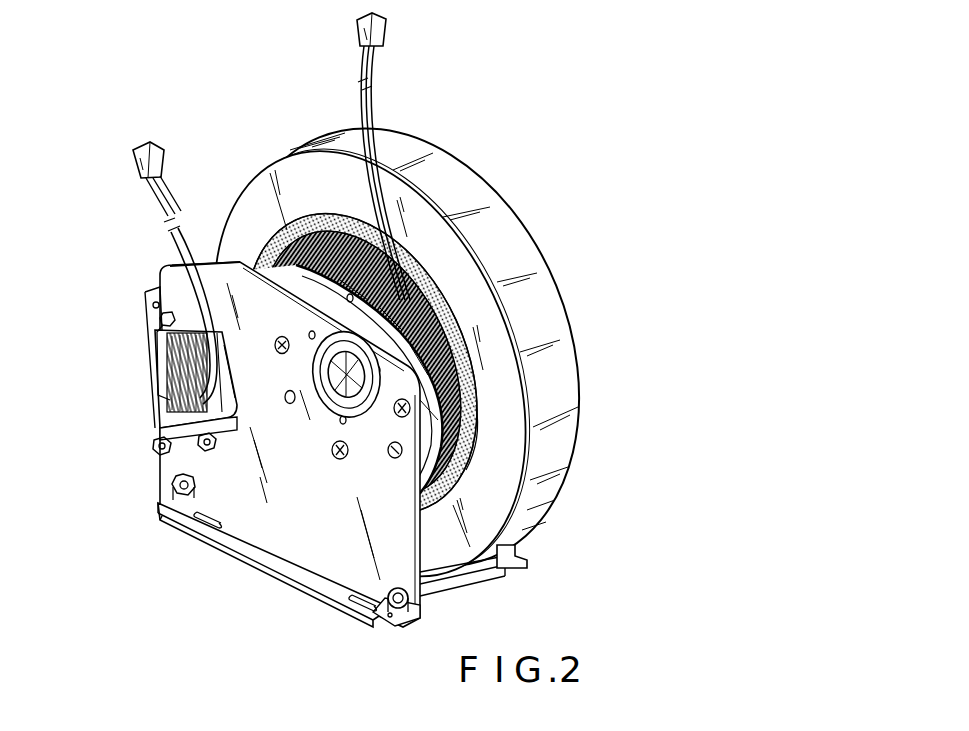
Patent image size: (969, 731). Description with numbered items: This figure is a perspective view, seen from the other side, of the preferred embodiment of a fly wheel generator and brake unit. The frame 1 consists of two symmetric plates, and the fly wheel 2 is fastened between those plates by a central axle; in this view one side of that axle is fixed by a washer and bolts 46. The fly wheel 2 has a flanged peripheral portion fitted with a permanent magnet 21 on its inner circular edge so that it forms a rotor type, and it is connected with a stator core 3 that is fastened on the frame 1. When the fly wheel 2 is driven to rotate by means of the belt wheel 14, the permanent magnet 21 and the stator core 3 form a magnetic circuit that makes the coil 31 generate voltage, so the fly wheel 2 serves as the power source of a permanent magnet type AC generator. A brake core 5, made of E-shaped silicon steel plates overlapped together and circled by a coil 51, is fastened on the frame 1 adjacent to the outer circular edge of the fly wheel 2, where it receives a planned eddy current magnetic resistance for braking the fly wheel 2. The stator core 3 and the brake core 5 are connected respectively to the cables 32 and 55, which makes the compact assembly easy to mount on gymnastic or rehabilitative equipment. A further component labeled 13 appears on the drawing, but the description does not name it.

The frame 1 is at (307, 533).
The fly wheel 2 is at (453, 195).
The stator core 3 is at (477, 360).
The brake core 5 is at (148, 372).
The base bar 13 is at (448, 573).
The belt wheel 14 is at (397, 627).
The permanent magnet 21 is at (453, 320).
The coil 31 is at (480, 440).
The cable 32 is at (378, 103).
The bolts 46 is at (347, 373).
The coil 51 is at (180, 398).
The cable 55 is at (200, 235).